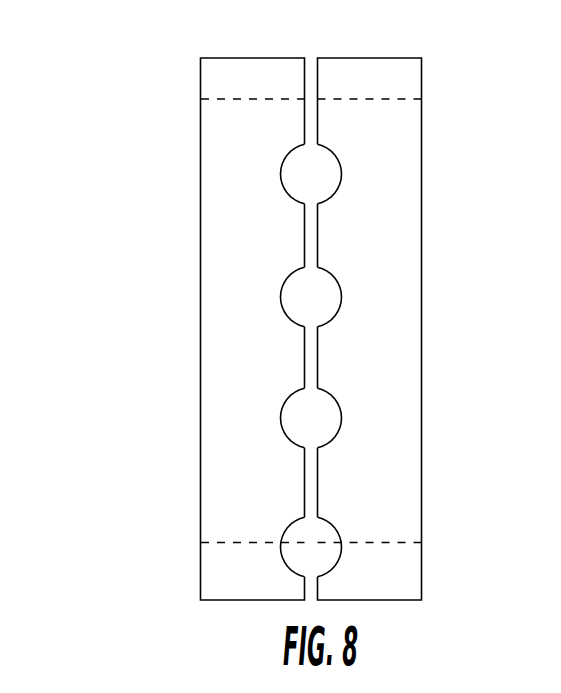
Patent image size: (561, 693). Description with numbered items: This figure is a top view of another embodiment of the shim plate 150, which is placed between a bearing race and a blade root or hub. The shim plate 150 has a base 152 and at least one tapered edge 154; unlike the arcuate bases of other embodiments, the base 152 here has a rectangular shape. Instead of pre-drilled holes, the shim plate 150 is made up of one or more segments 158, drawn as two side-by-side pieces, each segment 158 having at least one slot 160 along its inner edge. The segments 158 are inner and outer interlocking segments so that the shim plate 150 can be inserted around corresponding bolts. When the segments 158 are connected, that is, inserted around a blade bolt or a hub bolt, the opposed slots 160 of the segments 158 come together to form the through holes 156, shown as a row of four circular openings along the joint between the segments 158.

The shim plate 150 is at (128, 207).
The base 152 is at (192, 341).
The tapered edge 154 is at (357, 74).
The through hole 156 is at (310, 184).
The segment 158 is at (218, 422).
The slot 160 is at (280, 173).